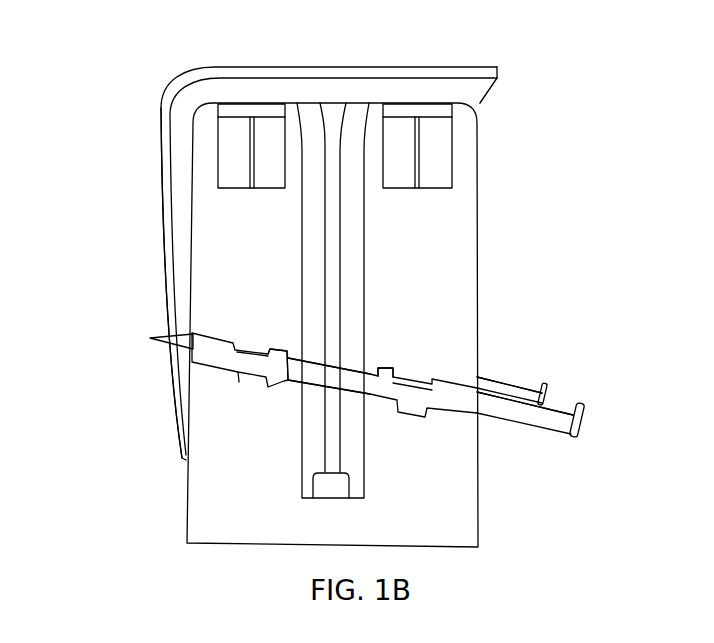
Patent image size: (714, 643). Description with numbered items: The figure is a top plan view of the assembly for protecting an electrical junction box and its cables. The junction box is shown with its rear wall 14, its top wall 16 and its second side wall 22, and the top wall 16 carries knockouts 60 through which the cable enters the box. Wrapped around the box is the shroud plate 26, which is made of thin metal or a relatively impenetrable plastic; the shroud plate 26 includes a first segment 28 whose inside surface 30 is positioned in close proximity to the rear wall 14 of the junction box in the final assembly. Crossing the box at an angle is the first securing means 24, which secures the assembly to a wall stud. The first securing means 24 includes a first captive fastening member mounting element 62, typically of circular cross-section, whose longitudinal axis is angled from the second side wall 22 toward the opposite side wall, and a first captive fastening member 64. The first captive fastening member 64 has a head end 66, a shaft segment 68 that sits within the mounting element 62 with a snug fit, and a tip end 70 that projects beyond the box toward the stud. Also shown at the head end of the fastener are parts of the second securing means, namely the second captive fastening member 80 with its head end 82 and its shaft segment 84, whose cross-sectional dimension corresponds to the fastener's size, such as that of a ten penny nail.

The rear wall 14 is at (330, 112).
The top wall 16 is at (203, 267).
The second side wall 22 is at (478, 281).
The first securing means 24 is at (226, 333).
The shroud plate 26 is at (176, 84).
The first segment 28 is at (503, 70).
The inside surface 30 is at (482, 93).
The knockouts 60 is at (216, 153).
The first captive fastening member mounting element 62 is at (274, 350).
The first captive fastening member 64 is at (504, 423).
The head end 66 is at (586, 423).
The shaft segment 68 is at (562, 424).
The tip end 70 is at (147, 334).
The second captive fastening member 80 is at (506, 374).
The head end 82 is at (549, 391).
The shaft segment 84 is at (539, 382).